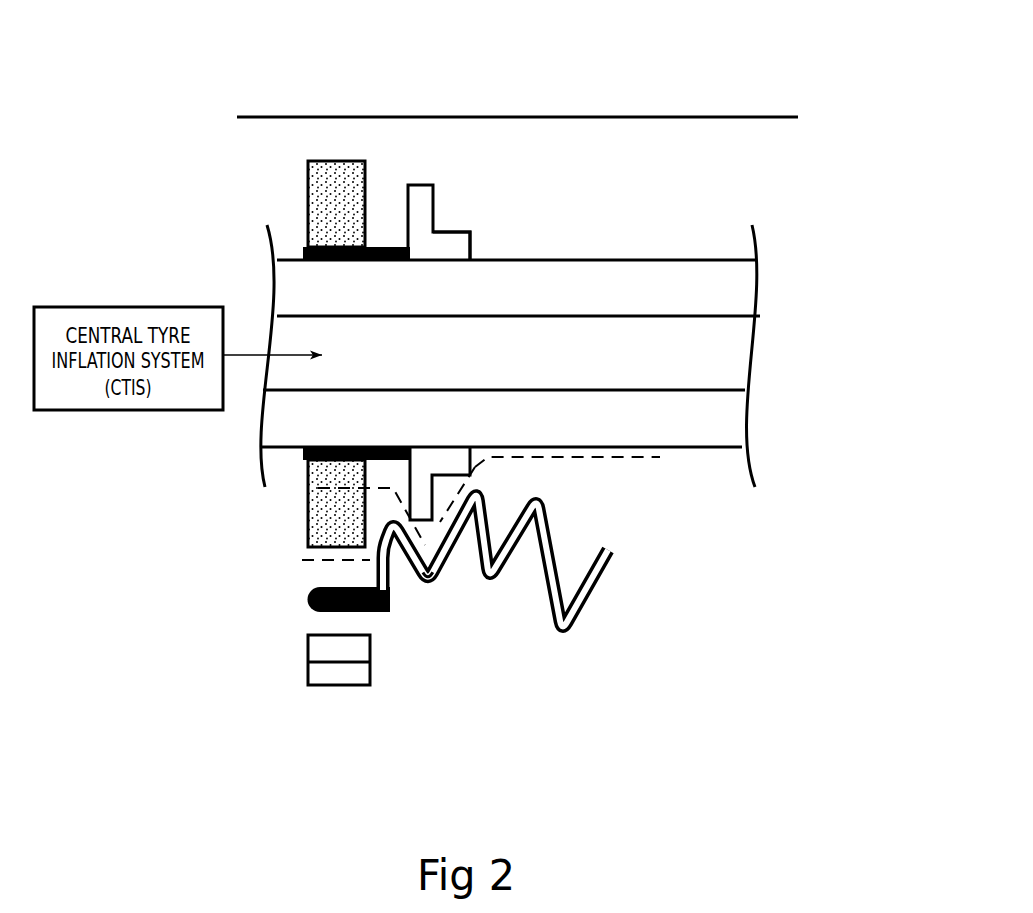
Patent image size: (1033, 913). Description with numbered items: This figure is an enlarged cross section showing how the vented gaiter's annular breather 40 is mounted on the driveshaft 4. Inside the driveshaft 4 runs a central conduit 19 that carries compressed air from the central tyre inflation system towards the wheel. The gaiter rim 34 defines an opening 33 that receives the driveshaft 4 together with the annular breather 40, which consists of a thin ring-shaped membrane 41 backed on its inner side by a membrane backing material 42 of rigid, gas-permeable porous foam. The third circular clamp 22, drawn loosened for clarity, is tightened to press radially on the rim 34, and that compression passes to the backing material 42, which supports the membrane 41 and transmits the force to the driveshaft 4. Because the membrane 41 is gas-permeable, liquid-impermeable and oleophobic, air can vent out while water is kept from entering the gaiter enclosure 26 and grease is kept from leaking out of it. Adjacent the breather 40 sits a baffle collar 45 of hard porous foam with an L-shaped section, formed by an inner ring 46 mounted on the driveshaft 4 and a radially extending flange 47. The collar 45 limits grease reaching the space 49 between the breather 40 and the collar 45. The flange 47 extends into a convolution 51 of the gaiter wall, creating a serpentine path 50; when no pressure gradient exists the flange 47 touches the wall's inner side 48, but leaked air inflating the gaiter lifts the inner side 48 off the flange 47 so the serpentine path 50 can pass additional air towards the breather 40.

The driveshaft 4 is at (652, 270).
The central conduit 19 is at (590, 367).
The third circular clamp 22 is at (330, 688).
The gaiter enclosure 26 is at (635, 487).
The opening 33 is at (272, 566).
The rim 34 is at (305, 605).
The annular breather 40 is at (252, 177).
The membrane 41 is at (307, 518).
The membrane backing material 42 is at (337, 190).
The baffle collar 45 is at (420, 474).
The inner ring 46 is at (448, 245).
The flange 47 is at (418, 212).
The inner side 48 is at (425, 548).
The space 49 is at (393, 208).
The serpentine path 50 is at (583, 462).
The convolution 51 is at (429, 593).